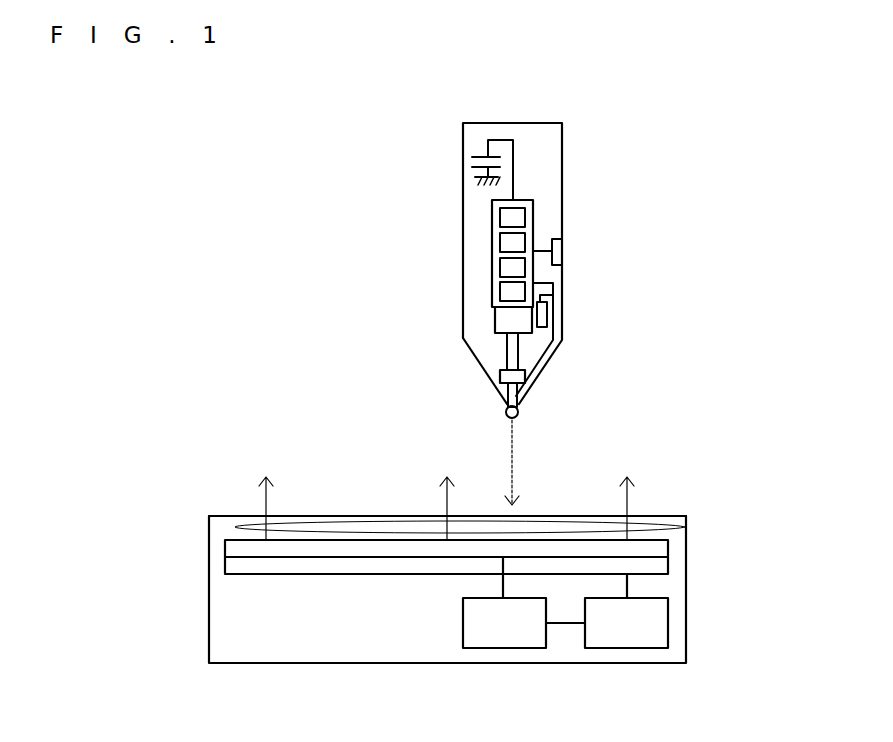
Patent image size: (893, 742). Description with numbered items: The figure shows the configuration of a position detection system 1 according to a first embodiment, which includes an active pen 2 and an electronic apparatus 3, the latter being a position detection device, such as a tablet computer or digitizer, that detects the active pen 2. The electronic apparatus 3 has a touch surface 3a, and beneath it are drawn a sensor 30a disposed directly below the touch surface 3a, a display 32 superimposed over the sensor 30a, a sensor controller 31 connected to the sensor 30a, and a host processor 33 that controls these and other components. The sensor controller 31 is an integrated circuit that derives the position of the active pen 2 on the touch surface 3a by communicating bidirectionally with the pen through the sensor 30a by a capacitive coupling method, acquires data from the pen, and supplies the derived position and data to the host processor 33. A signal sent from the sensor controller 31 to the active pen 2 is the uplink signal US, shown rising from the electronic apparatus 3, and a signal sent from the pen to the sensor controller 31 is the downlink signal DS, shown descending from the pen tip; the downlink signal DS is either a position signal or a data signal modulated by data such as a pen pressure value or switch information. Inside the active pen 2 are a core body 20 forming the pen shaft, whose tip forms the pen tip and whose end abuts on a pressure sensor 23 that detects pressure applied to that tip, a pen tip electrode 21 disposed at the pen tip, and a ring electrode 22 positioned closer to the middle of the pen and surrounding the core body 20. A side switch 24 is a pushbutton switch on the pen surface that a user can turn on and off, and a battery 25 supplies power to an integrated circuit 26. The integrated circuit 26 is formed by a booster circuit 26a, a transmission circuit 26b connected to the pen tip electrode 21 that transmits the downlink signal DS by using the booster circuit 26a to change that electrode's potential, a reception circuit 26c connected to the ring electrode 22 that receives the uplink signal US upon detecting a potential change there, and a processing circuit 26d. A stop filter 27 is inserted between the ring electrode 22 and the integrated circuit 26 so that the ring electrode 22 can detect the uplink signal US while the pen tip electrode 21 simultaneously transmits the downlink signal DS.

The position detection system 1 is at (251, 308).
The active pen 2 is at (547, 122).
The electronic apparatus 3 is at (686, 593).
The touch surface 3a is at (227, 516).
The core body 20 is at (512, 352).
The pen tip electrode 21 is at (517, 408).
The ring electrode 22 is at (502, 377).
The pressure sensor 23 is at (523, 325).
The side switch 24 is at (562, 251).
The battery 25 is at (483, 153).
The integrated circuit 26 is at (530, 203).
The booster circuit 26a is at (508, 214).
The transmission circuit 26b is at (508, 242).
The reception circuit 26c is at (508, 267).
The processing circuit 26d is at (508, 290).
The stop filter 27 is at (547, 312).
The sensor 30a is at (225, 547).
The sensor controller 31 is at (489, 634).
The display 32 is at (225, 566).
The host processor 33 is at (612, 634).
The uplink signal US is at (684, 526).
The downlink signal DS is at (515, 448).